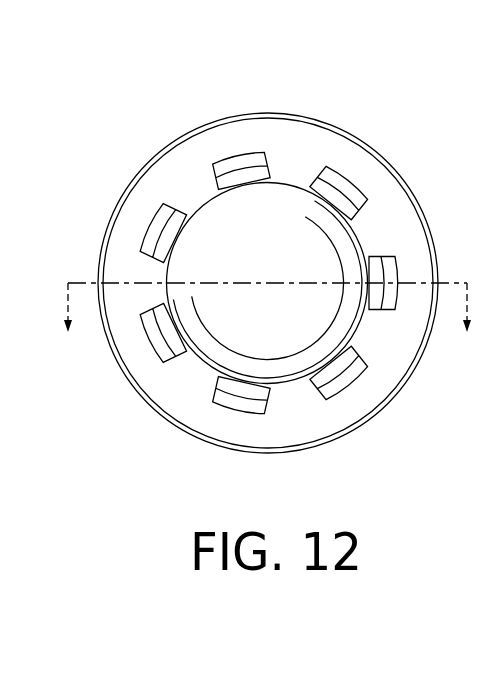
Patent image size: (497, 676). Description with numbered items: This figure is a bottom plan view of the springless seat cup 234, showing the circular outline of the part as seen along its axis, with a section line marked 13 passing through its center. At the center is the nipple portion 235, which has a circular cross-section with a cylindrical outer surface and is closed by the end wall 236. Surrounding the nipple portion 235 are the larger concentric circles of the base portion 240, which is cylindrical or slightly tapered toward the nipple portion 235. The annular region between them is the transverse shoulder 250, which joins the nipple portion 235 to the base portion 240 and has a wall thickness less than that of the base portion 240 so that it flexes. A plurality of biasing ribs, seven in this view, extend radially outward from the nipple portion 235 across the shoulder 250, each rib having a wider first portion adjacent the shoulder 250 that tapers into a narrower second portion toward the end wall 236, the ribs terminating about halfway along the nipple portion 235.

The springless seat cup 234 is at (403, 157).
The base portion 240 is at (226, 117).
The transverse shoulder 250 is at (165, 182).
The nipple portion 235 is at (297, 180).
The end wall 236 is at (289, 276).
The section line 13- 13 is at (272, 336).